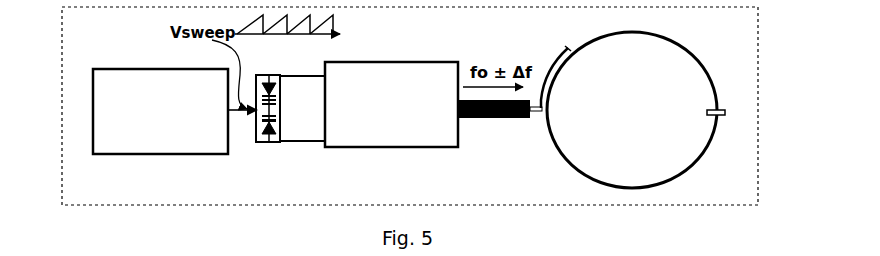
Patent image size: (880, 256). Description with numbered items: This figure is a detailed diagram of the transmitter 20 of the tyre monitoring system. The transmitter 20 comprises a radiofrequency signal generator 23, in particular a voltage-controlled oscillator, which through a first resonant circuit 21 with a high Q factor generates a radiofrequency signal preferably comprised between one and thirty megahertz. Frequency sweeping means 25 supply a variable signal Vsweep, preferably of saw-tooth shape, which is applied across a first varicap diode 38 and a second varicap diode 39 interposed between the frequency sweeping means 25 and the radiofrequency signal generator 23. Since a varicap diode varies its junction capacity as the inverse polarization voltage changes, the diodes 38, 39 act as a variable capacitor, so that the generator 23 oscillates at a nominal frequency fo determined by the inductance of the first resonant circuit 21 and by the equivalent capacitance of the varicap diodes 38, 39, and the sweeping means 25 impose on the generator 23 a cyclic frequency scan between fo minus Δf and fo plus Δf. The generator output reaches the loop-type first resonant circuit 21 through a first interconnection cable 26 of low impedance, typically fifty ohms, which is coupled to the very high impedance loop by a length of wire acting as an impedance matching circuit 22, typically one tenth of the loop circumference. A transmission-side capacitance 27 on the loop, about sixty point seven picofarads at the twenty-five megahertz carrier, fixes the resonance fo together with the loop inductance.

The transmitter 20 is at (62, 135).
The first resonant circuit 21 is at (662, 33).
The impedance matching circuit 22 is at (545, 70).
The radiofrequency signal generator 23 is at (414, 62).
The frequency sweeping means 25 is at (138, 69).
The first interconnection cable 26 is at (488, 118).
The transmission-side capacitance 27 is at (720, 116).
The first varicap diode 38 is at (281, 137).
The second varicap diode 39 is at (281, 90).